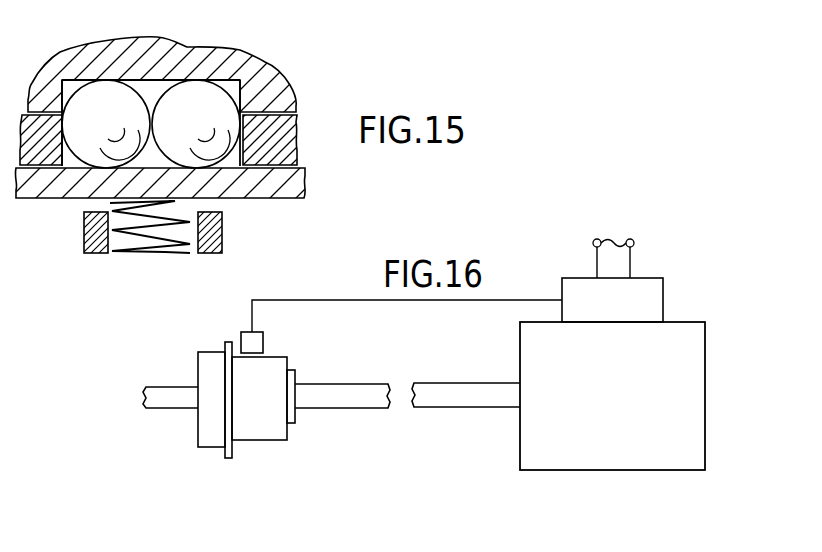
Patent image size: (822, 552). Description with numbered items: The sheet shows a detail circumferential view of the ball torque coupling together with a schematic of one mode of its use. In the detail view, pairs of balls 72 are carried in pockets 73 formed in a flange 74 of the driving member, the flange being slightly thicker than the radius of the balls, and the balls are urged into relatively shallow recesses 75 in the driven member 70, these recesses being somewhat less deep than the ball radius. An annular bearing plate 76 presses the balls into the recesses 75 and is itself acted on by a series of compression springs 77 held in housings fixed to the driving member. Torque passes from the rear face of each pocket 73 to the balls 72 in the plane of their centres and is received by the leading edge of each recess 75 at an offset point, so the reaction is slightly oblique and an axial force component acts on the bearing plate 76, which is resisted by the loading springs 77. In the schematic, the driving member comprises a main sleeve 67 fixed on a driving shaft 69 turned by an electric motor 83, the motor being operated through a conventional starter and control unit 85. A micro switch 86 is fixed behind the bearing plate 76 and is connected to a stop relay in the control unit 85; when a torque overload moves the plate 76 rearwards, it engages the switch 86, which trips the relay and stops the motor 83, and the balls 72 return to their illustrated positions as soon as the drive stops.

In FIG. 15, the driven member 70 is at (220, 57).
In FIG. 16, the driven member 70 is at (208, 372).
In FIG. 15, the balls 72 is at (180, 92).
In FIG. 15, the pockets 73 is at (233, 160).
In FIG. 15, the flange 74 is at (277, 133).
In FIG. 15, the recesses 75 is at (72, 88).
In FIG. 15, the annular bearing plate 76 is at (78, 188).
In FIG. 16, the annular bearing plate 76 is at (225, 455).
In FIG. 15, the compression springs 77 is at (158, 247).
In FIG. 16, the main sleeve 67 is at (293, 417).
In FIG. 16, the driving shaft 69 is at (437, 402).
In FIG. 16, the electric motor 83 is at (612, 396).
In FIG. 16, the starter and control unit 85 is at (577, 283).
In FIG. 16, the micro switch 86 is at (263, 340).